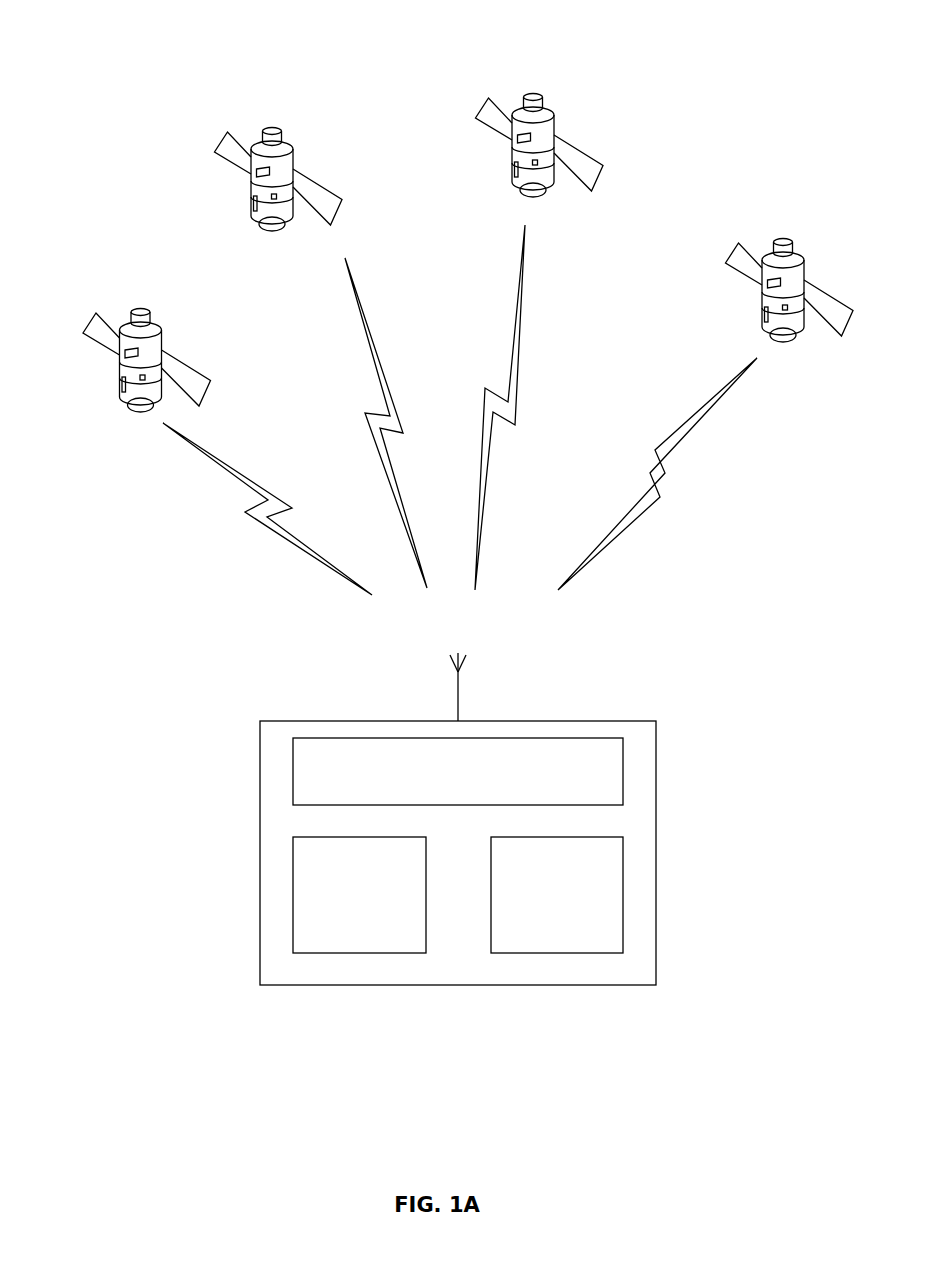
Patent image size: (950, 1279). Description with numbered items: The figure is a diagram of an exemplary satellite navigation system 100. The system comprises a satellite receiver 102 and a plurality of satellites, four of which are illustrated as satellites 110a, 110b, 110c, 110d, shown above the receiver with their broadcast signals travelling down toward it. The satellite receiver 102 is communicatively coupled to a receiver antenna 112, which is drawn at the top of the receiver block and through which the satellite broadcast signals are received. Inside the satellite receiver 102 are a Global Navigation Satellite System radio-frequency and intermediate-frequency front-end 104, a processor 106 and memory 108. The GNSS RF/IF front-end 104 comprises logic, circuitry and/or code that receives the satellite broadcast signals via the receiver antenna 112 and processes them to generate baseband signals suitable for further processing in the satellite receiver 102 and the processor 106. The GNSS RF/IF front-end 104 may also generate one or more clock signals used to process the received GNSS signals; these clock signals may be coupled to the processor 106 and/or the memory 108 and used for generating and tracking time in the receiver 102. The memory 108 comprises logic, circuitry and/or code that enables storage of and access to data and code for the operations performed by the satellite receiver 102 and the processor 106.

The satellite navigation system 100 is at (40, 0).
The satellite receiver 102 is at (589, 721).
The GNSS RF/IF front-end 104 is at (408, 805).
The processor 106 is at (326, 837).
The memory 108 is at (540, 837).
The satellite 110a is at (165, 350).
The satellite 110b is at (252, 198).
The satellite 110c is at (513, 150).
The satellite 110d is at (763, 294).
The receiver antenna 112 is at (458, 680).